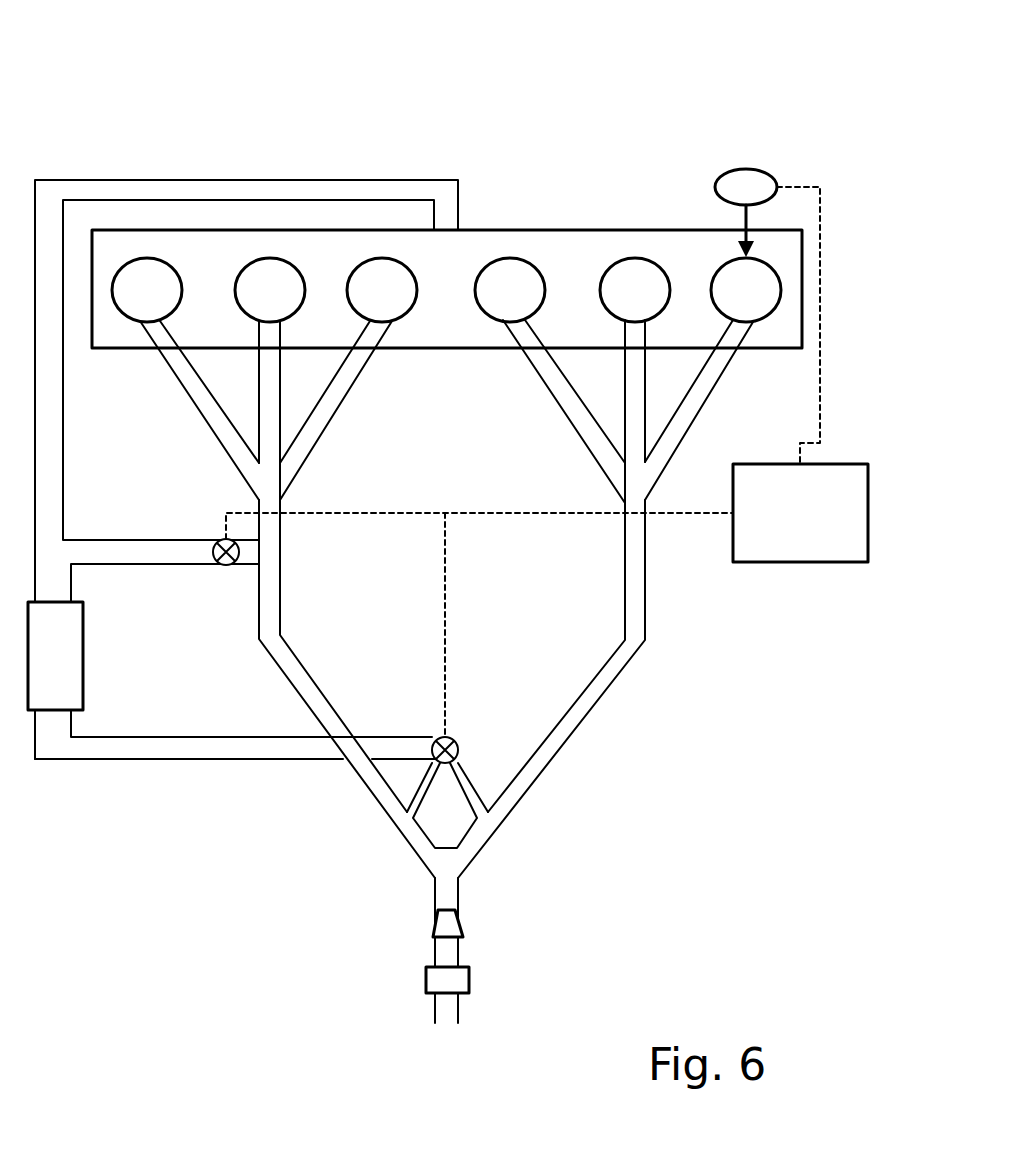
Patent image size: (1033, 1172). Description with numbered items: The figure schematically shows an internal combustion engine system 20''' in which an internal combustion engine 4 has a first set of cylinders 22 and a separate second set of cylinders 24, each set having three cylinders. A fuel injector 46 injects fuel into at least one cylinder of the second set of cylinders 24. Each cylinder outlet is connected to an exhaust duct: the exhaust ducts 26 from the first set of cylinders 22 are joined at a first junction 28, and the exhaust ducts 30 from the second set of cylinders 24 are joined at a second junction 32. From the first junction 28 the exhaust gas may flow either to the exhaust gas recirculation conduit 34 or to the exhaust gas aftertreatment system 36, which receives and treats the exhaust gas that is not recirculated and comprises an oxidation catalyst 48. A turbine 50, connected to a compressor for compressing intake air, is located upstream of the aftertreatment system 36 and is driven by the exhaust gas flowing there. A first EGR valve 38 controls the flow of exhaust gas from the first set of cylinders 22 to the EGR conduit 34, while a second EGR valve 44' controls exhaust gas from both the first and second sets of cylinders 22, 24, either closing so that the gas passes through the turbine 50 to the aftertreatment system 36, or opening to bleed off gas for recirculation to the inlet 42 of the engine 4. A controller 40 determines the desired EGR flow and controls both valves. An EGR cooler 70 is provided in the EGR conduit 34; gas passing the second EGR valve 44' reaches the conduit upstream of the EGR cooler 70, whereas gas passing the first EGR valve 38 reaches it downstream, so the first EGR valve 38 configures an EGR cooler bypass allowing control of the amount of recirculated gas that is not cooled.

The internal combustion engine system 20''' is at (119, 63).
The internal combustion engine 4 is at (560, 250).
The first set of cylinders 22 is at (362, 287).
The second set of cylinders 24 is at (538, 287).
The exhaust ducts 26 is at (227, 430).
The first junction 28 is at (272, 480).
The exhaust ducts 30 is at (693, 402).
The second junction 32 is at (633, 480).
The exhaust gas recirculation (EGR) conduit 34 is at (53, 403).
The exhaust gas aftertreatment system (EATS) 36 is at (660, 910).
The first EGR valve 38 is at (220, 568).
The controller 40 is at (782, 531).
The inlet 42 is at (447, 229).
The second EGR valve 44' is at (474, 700).
The fuel injector 46 is at (752, 177).
The oxidation catalyst 48 is at (462, 975).
The turbine 50 is at (460, 918).
The EGR cooler 70 is at (75, 675).